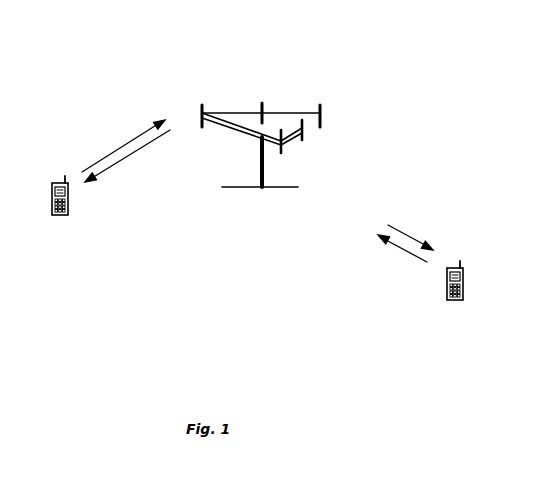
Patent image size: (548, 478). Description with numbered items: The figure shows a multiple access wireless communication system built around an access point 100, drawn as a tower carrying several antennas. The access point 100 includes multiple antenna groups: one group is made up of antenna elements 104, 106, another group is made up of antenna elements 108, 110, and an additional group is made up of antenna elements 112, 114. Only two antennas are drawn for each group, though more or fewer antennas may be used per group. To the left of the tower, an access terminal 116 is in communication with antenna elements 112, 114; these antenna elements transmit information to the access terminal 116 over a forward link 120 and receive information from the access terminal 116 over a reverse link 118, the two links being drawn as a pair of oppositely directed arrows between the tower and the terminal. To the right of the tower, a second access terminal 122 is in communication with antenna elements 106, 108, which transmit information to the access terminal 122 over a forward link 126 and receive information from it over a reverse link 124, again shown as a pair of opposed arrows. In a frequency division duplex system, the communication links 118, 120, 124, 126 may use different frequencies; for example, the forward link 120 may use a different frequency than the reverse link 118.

The access point 100 is at (250, 187).
The antenna element 104 is at (282, 152).
The antenna element 106 is at (303, 138).
The antenna element 108 is at (322, 123).
The antenna element 110 is at (263, 102).
The antenna element 112 is at (203, 112).
The antenna element 114 is at (243, 118).
The access terminal 116 is at (63, 180).
The reverse link 118 is at (125, 144).
The forward link 120 is at (135, 153).
The access terminal 122 is at (457, 262).
The reverse link 124 is at (397, 249).
The forward link 126 is at (409, 238).